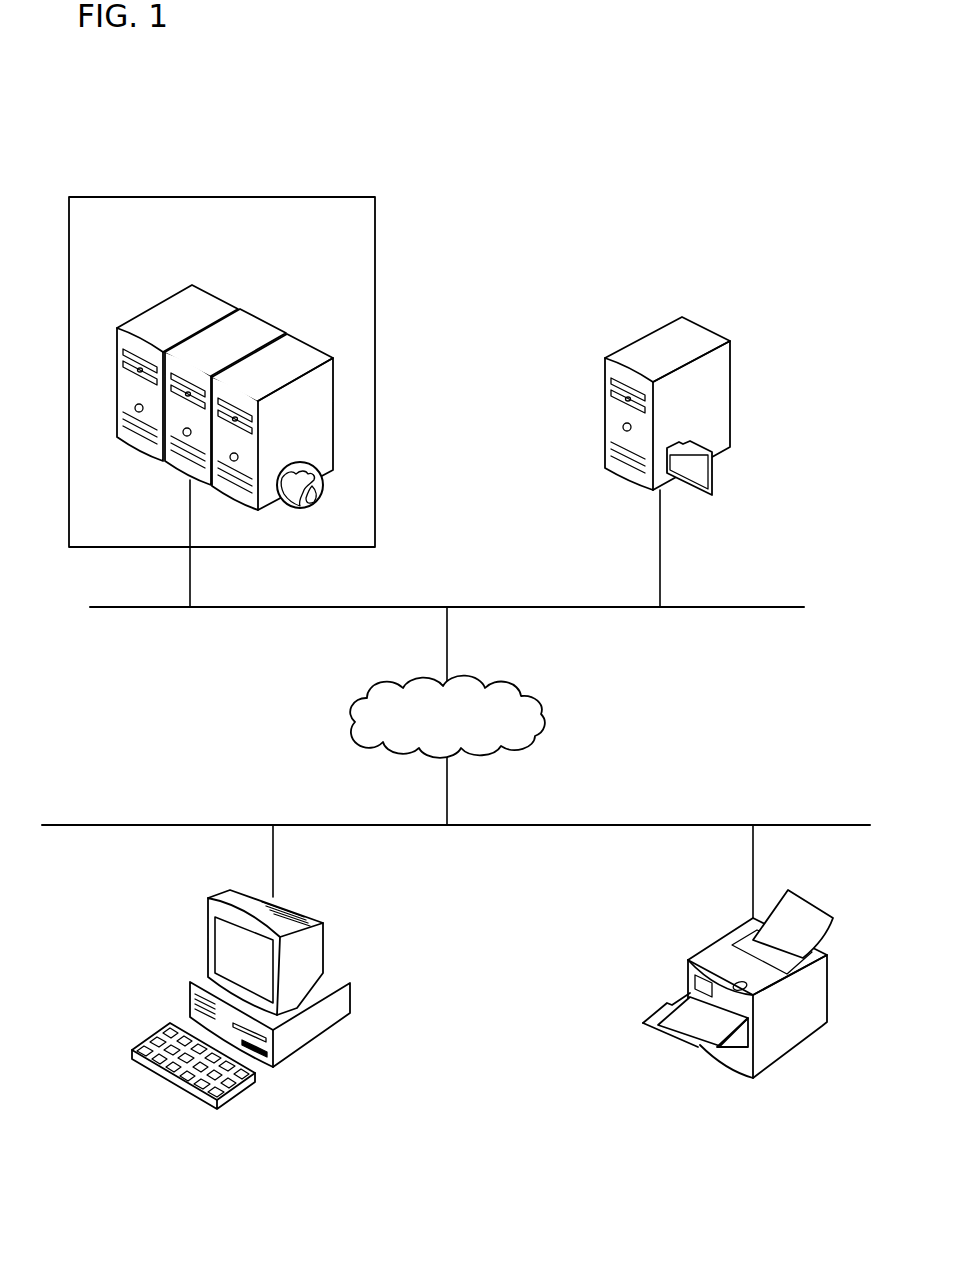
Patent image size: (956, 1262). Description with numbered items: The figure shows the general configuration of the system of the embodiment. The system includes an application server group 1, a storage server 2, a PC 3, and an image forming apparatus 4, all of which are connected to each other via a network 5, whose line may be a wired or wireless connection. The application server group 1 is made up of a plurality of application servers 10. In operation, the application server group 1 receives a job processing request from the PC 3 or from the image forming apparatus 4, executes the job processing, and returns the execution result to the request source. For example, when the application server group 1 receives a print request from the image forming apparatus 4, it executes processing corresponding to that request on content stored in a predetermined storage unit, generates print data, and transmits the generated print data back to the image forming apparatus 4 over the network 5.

The application server group 1 is at (279, 197).
The application servers 10 is at (218, 294).
The storage server 2 is at (605, 390).
The network 5 is at (352, 698).
The PC 3 is at (208, 944).
The image forming apparatus 4 is at (688, 973).